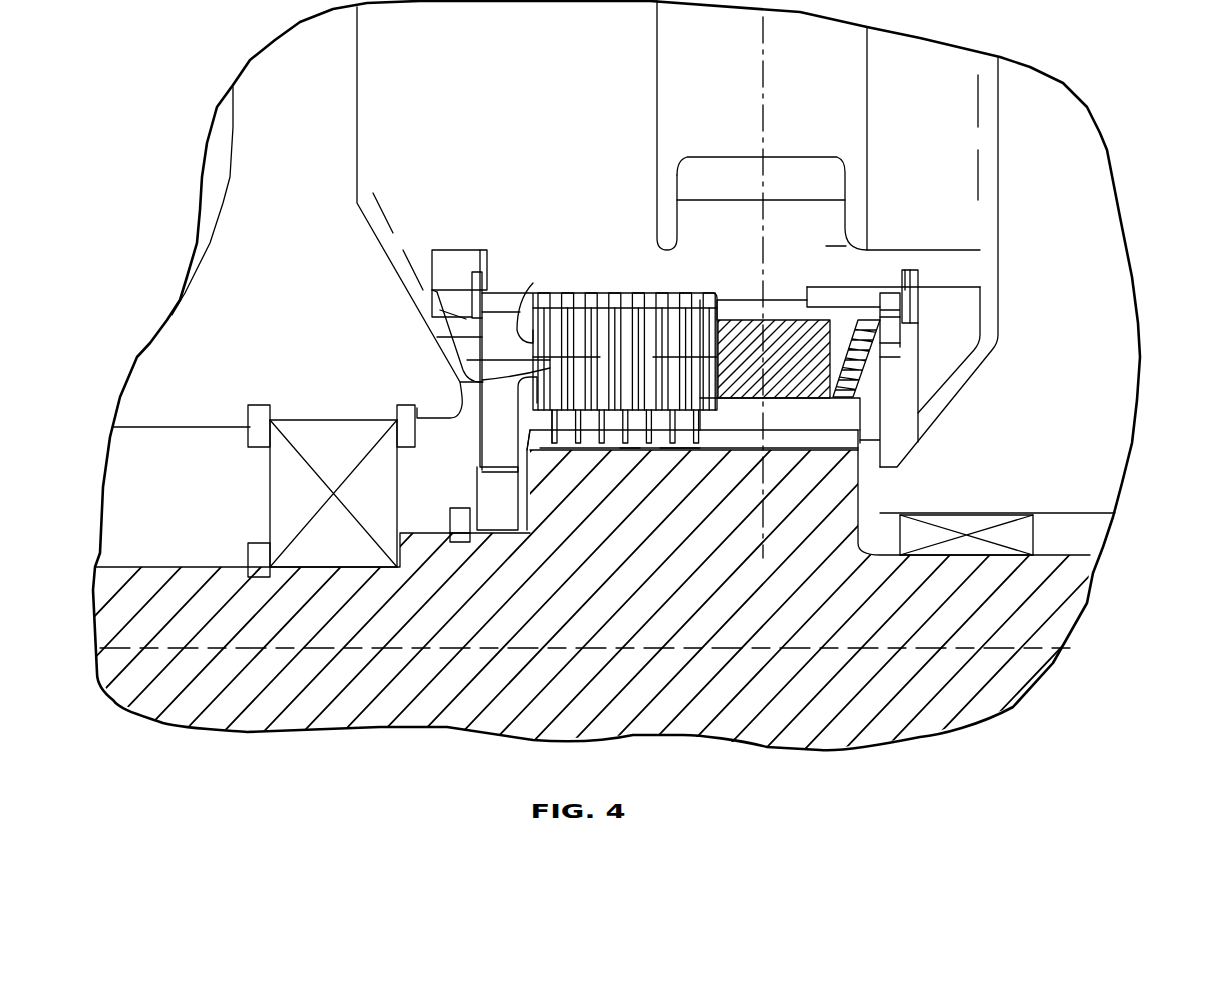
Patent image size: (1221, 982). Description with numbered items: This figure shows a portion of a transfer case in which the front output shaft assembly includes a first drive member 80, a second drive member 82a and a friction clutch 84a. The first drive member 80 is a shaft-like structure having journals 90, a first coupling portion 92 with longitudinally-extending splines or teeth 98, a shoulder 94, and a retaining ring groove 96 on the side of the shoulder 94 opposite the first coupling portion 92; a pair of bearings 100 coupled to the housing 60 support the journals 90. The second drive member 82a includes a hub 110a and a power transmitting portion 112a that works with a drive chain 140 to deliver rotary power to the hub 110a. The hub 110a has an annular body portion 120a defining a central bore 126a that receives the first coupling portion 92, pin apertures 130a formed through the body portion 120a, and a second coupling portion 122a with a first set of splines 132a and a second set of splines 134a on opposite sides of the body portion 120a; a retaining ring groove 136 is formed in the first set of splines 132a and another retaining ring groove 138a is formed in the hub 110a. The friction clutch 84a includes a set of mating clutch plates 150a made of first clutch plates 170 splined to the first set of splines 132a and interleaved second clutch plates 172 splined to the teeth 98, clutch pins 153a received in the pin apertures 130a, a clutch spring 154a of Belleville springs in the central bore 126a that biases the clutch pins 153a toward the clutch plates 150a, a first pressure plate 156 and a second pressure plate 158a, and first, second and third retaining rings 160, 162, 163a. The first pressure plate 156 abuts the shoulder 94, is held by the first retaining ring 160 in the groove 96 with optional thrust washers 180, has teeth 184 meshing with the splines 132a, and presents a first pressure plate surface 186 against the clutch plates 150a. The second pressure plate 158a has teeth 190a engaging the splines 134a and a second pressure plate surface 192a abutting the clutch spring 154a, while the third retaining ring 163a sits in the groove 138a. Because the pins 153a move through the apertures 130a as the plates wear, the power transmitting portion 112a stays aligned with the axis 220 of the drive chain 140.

The housing 60 is at (1100, 492).
The first drive member 80 is at (837, 545).
The second drive member 82a is at (826, 247).
The friction clutch 84a is at (923, 335).
The journals 90 is at (275, 613).
The first coupling portion 92 is at (633, 470).
The shoulder 94 is at (530, 500).
The retaining ring groove 96 is at (457, 548).
The longitudinally-extending splines or teeth 98 is at (687, 450).
The bearings 100 is at (310, 420).
The hub 110a is at (643, 257).
The power transmitting portion 112a is at (688, 168).
The body portion 120a is at (730, 310).
The second coupling portion 122a is at (673, 293).
The central bore 126a is at (465, 320).
The pin apertures 130a is at (737, 430).
The first set of longitudinally extending splines or teeth 132a is at (653, 300).
The second set of longitudinally extending splines or teeth 134a is at (940, 297).
The retaining ring groove 136 is at (476, 272).
The retaining ring groove 138a is at (905, 272).
The drive chain 140 is at (862, 87).
The set of mating clutch plates 150a is at (530, 400).
The clutch pins 153a is at (777, 400).
The clutch spring 154a is at (868, 383).
The first pressure plate 156 is at (492, 343).
The second pressure plate 158a is at (890, 347).
The first retaining ring 160 is at (453, 520).
The second retaining ring 162 is at (440, 290).
The third retaining ring 163a is at (913, 287).
The first clutch plates 170 is at (463, 383).
The second clutch plates 172 is at (575, 445).
The thrust washers 180 is at (477, 527).
The teeth 184 is at (503, 313).
The first pressure plate surface 186 is at (525, 345).
The teeth 190a is at (890, 315).
The second pressure plate surface 192a is at (893, 345).
The axis 220 is at (766, 62).